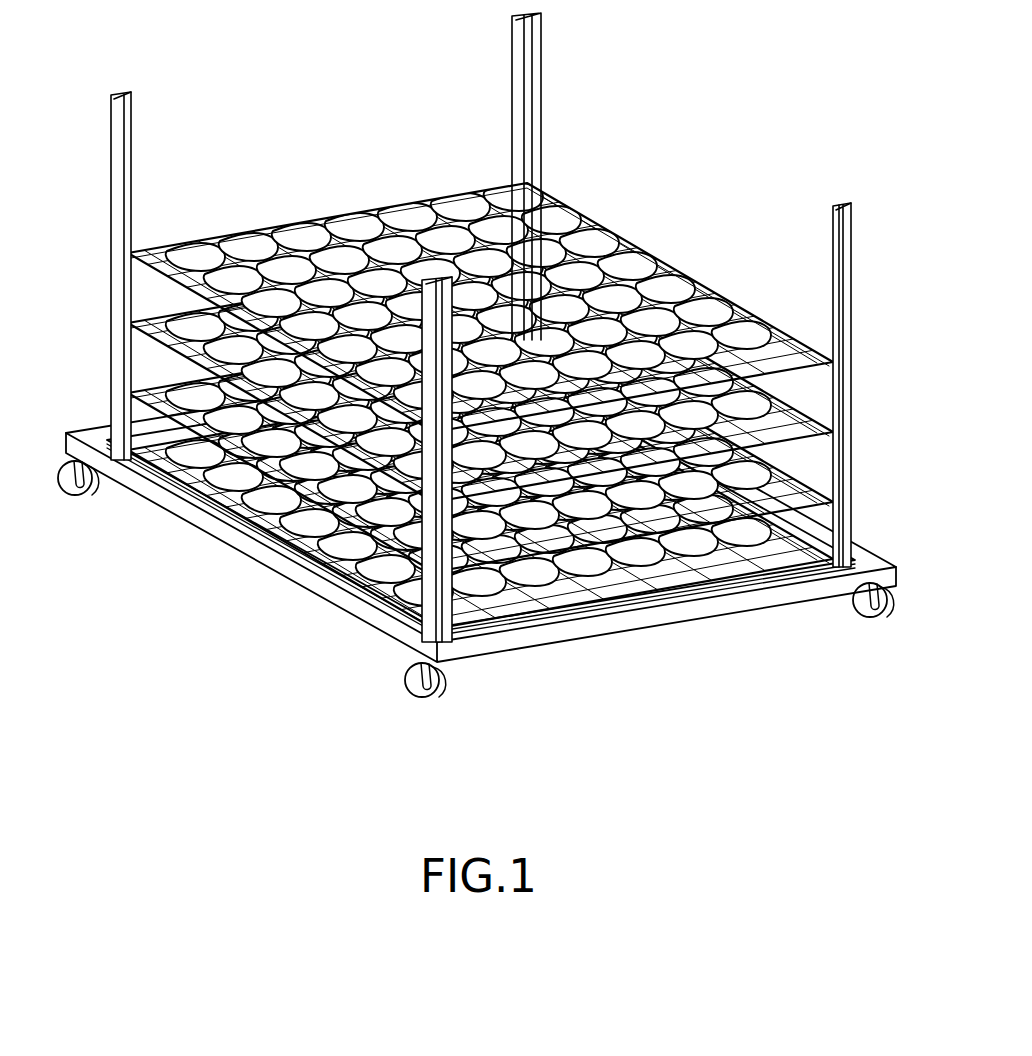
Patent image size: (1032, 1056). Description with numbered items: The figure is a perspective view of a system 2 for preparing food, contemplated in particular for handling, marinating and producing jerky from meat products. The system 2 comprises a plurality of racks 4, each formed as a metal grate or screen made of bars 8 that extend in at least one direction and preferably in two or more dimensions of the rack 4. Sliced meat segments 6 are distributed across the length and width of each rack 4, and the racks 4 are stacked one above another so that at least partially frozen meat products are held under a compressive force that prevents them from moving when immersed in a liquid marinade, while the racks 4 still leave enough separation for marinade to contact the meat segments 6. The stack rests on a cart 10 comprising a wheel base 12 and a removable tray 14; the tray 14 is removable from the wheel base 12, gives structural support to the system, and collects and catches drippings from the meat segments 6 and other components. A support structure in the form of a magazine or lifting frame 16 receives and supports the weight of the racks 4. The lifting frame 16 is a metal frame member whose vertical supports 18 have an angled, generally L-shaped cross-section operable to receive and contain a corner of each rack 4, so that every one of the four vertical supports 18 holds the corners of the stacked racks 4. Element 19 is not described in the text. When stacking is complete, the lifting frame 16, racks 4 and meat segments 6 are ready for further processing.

The system 2 is at (474, 375).
The rack 4 is at (507, 404).
The sliced meat segments 6 is at (353, 226).
The bars 8 is at (588, 214).
The cart 10 is at (483, 547).
The wheel base 12 is at (898, 584).
The removable tray 14 is at (860, 556).
The lifting frame 16 is at (474, 375).
The vertical supports 18 is at (132, 150).
The rail 19 is at (155, 450).